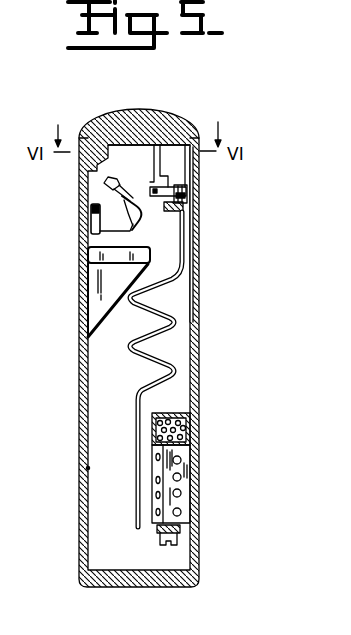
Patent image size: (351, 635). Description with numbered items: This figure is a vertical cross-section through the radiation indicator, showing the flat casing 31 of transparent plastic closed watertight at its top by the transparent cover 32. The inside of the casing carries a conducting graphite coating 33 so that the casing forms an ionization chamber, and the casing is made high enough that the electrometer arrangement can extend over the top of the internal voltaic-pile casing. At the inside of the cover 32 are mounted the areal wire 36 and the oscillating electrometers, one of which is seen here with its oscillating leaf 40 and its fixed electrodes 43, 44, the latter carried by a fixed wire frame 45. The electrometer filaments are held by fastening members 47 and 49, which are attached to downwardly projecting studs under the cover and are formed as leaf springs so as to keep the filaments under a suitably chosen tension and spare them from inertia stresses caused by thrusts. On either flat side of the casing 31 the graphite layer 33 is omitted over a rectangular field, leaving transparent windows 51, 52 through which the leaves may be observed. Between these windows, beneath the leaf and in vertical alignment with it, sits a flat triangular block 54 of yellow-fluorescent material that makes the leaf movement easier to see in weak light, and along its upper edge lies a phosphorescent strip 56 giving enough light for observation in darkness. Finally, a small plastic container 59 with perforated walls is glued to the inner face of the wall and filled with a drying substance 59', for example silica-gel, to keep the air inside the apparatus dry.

The flat casing 31 is at (83, 393).
The transparent cover 32 is at (147, 117).
The conducting internal coating 33 is at (88, 468).
The areal wire 36 is at (162, 283).
The oscillating leaf 40 is at (136, 214).
The fixed electrode 43 is at (102, 184).
The fixed electrode 44 is at (135, 230).
The fixed wire frame 45 is at (97, 243).
The fastening member 47 is at (146, 187).
The fastening member 49 is at (154, 204).
The transparent window 51 is at (87, 292).
The transparent window 52 is at (193, 270).
The flat triangular block 54 is at (98, 307).
The phosphorescent strip 56 is at (97, 253).
The plastic container 59 is at (195, 495).
The drying substance 59' is at (198, 429).